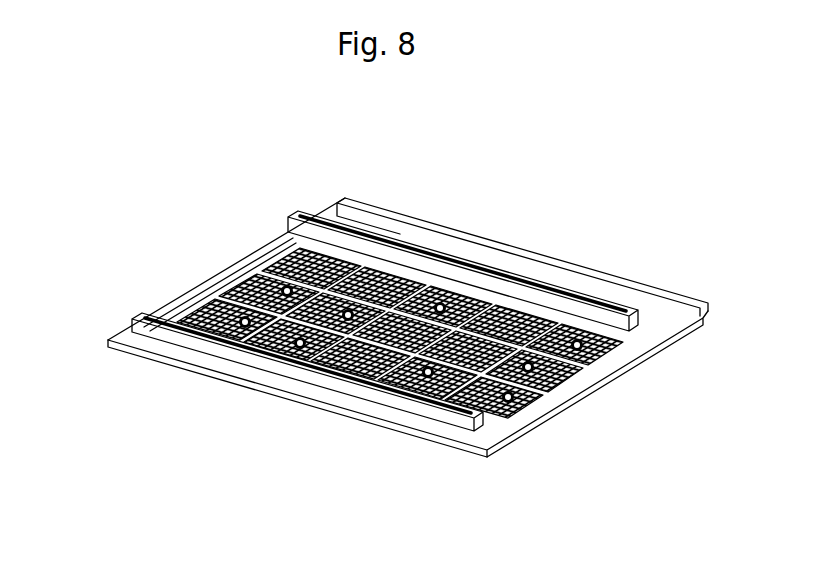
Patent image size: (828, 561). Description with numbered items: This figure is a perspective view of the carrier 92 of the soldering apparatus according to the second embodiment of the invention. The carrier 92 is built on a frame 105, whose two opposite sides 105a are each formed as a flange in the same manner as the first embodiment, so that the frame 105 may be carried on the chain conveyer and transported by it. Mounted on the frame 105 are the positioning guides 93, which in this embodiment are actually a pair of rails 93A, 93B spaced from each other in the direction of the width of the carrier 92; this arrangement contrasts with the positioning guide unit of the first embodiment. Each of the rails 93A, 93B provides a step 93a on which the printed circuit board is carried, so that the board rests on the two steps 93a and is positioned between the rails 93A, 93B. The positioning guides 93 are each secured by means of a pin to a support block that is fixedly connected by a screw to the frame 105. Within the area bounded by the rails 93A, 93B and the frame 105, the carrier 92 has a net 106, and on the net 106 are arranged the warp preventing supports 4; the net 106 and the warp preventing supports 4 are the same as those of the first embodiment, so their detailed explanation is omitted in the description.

The warp preventing support 4 is at (243, 316).
The carrier 92 is at (590, 271).
The positioning guide 93 is at (342, 303).
The rail 93A is at (297, 217).
The rail 93B is at (130, 321).
The step 93a is at (387, 257).
The frame 105 is at (608, 382).
The flange 105a is at (277, 398).
The net 106 is at (207, 306).